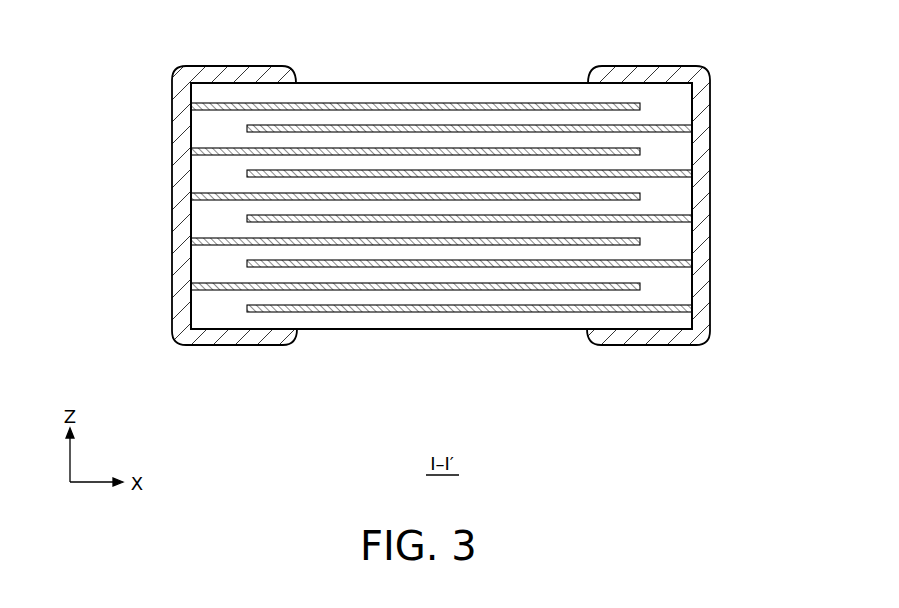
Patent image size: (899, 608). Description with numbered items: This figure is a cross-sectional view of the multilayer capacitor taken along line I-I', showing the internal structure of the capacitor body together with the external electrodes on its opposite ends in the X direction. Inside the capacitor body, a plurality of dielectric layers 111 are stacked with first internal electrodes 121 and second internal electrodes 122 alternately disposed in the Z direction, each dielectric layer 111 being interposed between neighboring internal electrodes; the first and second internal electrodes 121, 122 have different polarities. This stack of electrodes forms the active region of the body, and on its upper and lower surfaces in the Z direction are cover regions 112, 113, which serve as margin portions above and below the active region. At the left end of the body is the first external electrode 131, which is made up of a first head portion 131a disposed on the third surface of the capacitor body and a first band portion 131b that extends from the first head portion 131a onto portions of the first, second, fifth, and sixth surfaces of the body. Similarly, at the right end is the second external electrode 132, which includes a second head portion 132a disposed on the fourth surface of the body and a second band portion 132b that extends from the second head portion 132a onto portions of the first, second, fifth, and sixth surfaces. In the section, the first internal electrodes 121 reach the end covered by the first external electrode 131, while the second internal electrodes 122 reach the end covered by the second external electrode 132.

The dielectric layer 111 is at (682, 152).
The cover region 112 is at (517, 95).
The cover region 113 is at (472, 318).
The first internal electrode 121 is at (445, 103).
The second internal electrode 122 is at (368, 128).
The first external electrode 131 is at (315, 213).
The first head portion 131a is at (178, 255).
The first band portion 131b is at (220, 346).
The second external electrode 132 is at (729, 212).
The second head portion 132a is at (702, 255).
The second band portion 132b is at (660, 338).